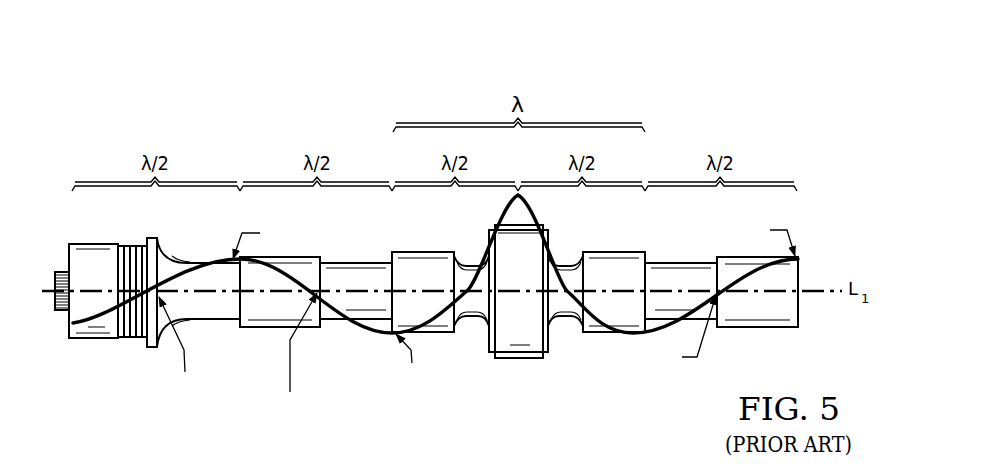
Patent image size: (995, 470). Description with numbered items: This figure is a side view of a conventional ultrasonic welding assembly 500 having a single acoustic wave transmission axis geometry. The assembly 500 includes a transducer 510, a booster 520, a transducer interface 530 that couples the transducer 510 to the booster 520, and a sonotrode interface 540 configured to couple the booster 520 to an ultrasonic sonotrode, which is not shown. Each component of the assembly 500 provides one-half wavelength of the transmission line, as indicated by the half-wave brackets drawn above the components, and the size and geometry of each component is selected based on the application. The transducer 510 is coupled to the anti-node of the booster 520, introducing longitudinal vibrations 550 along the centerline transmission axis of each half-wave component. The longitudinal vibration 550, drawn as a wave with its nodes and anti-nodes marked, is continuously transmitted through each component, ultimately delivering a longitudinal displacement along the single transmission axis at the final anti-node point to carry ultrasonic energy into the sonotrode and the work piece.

The ultrasonic welding assembly 500 is at (236, 126).
The transducer 510 is at (95, 340).
The booster 520 is at (518, 358).
The transducer interface 530 is at (258, 328).
The sonotrode interface 540 is at (757, 328).
The longitudinal vibrations 550 is at (189, 262).